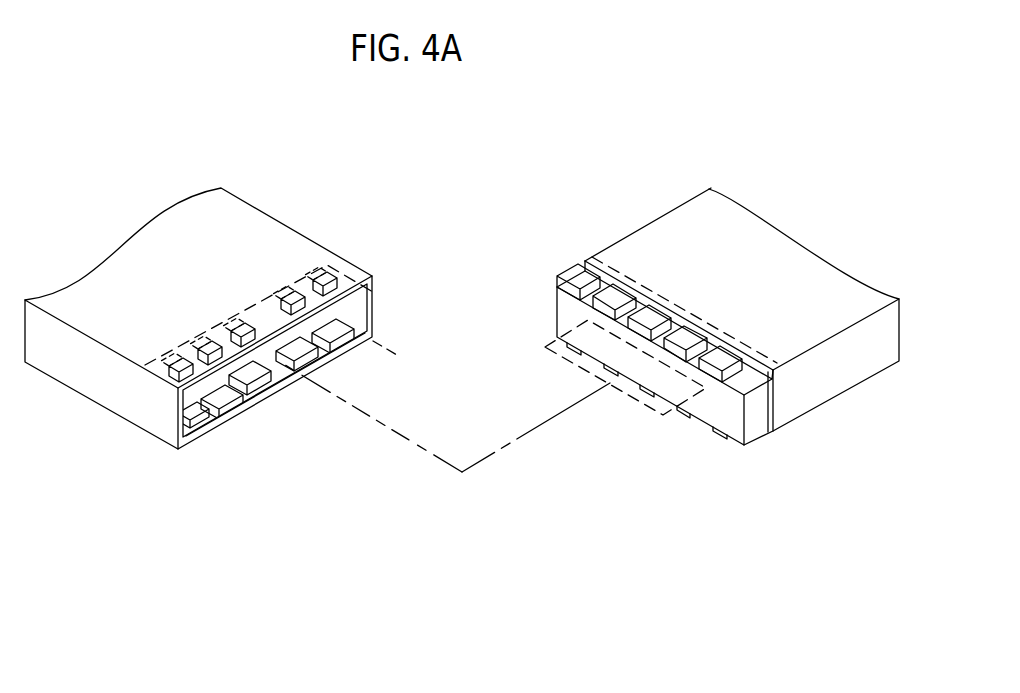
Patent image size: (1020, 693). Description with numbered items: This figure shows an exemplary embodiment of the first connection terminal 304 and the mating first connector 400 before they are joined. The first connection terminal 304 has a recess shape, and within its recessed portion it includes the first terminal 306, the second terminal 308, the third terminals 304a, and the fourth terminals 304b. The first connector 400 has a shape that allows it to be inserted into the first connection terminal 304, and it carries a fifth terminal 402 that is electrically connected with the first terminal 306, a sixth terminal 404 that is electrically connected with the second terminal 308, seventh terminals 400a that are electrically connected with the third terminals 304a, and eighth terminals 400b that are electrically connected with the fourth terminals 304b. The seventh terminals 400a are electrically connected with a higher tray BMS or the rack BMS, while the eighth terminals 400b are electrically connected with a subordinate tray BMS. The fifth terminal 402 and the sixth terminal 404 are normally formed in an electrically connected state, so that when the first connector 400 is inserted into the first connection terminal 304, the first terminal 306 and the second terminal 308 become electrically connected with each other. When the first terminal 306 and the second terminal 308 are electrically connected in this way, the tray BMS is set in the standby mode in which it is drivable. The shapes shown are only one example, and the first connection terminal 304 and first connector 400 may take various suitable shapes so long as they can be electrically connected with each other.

The first connection terminal 304 is at (374, 300).
The third terminals 304a is at (378, 350).
The fourth terminals 304b is at (300, 278).
The first terminal 306 is at (237, 408).
The second terminal 308 is at (197, 424).
The first connector 400 is at (670, 213).
The seventh terminals 400a is at (590, 378).
The eighth terminals 400b is at (568, 278).
The fifth terminal 402 is at (686, 411).
The sixth terminal 404 is at (720, 432).